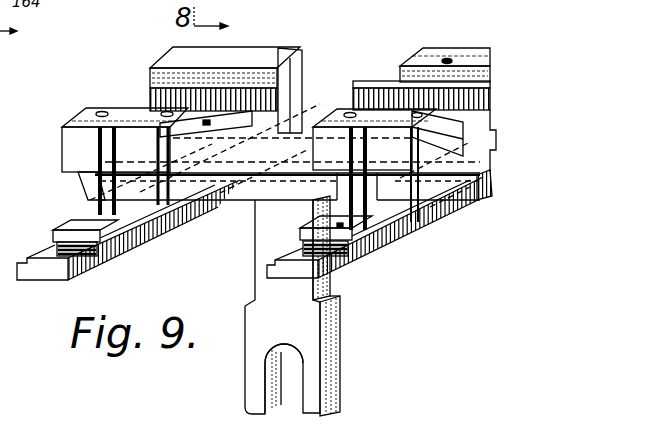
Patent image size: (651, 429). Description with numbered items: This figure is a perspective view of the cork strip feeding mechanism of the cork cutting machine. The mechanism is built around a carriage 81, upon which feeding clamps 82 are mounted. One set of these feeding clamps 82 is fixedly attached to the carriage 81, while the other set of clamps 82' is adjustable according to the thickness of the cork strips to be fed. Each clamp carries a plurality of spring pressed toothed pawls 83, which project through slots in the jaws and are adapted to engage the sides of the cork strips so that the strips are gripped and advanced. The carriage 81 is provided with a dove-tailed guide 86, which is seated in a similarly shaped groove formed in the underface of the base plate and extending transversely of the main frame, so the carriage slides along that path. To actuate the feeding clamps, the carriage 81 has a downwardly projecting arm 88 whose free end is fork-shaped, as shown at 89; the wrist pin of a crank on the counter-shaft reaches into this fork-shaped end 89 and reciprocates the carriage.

The feeding clamps 82 is at (445, 49).
The adjustable feeding clamps 82' is at (388, 148).
The spring pressed toothed pawls 83 is at (378, 95).
The dove-tailed guide 86 is at (485, 201).
The carriage 81 is at (410, 218).
The downwardly projecting arm 88 is at (310, 323).
The fork-shaped end 89 is at (295, 382).